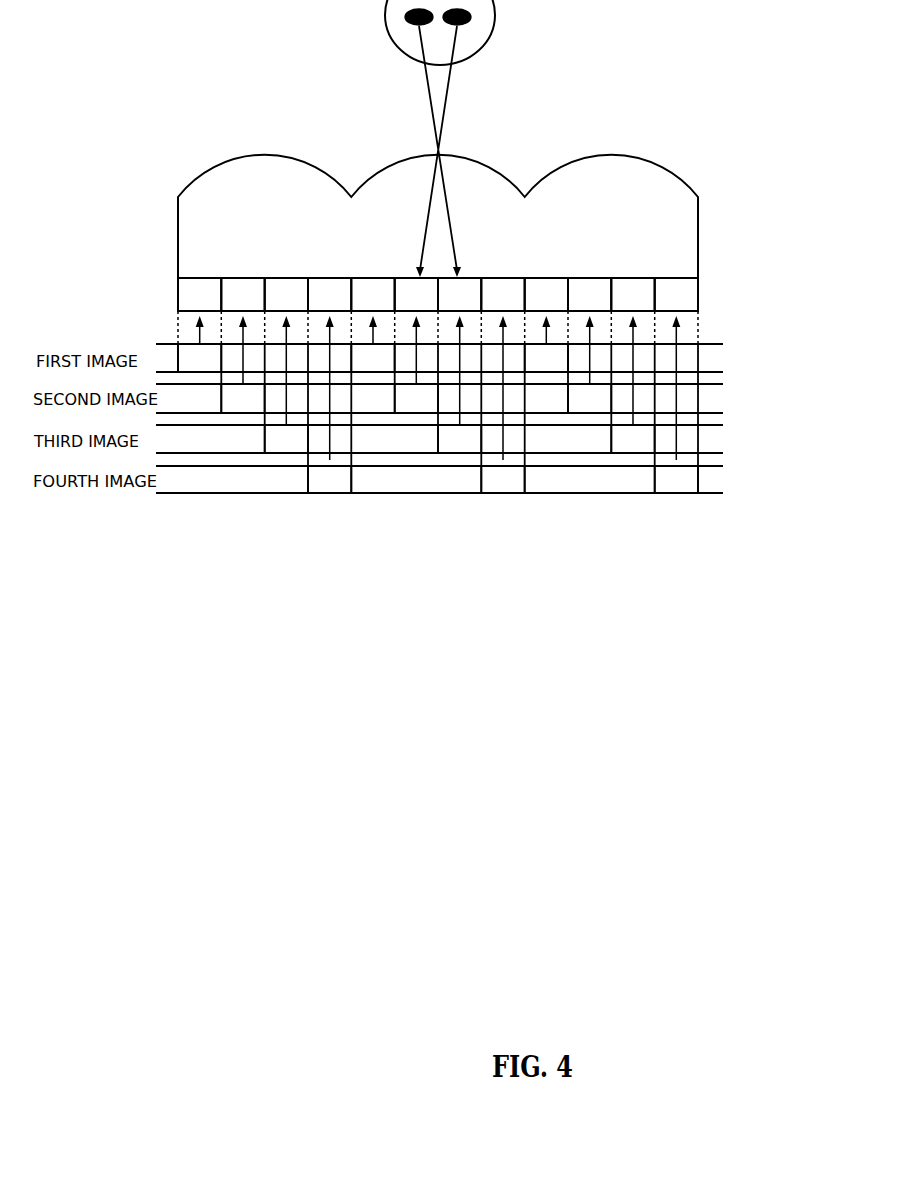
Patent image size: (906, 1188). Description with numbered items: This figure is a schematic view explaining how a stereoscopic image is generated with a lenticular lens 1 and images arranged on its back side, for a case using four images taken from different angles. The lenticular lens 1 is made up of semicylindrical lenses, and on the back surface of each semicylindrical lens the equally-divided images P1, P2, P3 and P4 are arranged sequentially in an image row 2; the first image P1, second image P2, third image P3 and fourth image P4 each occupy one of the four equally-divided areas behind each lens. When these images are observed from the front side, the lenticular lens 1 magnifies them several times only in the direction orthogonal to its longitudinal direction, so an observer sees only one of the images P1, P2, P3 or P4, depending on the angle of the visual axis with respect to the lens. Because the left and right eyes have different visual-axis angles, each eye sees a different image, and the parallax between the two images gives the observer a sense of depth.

The lenticular lens 1 is at (682, 221).
The display panel pixel row 2 is at (712, 291).
The first image P1 is at (373, 325).
The second image P2 is at (416, 345).
The third image P3 is at (460, 365).
The fourth image P4 is at (503, 385).